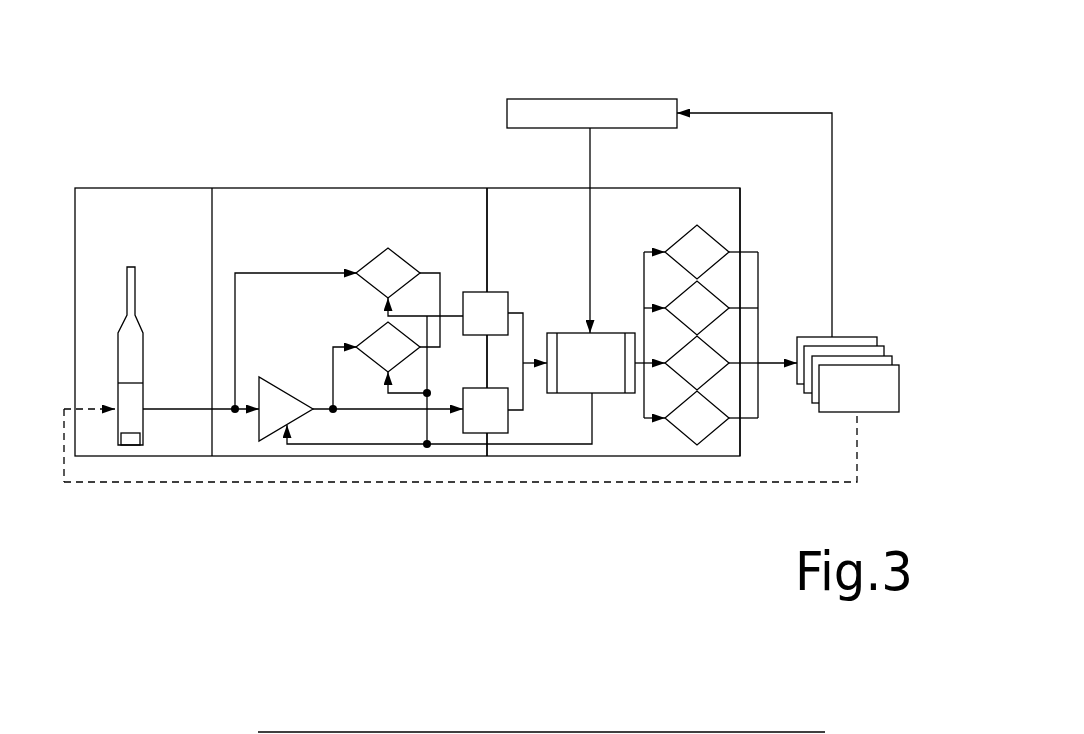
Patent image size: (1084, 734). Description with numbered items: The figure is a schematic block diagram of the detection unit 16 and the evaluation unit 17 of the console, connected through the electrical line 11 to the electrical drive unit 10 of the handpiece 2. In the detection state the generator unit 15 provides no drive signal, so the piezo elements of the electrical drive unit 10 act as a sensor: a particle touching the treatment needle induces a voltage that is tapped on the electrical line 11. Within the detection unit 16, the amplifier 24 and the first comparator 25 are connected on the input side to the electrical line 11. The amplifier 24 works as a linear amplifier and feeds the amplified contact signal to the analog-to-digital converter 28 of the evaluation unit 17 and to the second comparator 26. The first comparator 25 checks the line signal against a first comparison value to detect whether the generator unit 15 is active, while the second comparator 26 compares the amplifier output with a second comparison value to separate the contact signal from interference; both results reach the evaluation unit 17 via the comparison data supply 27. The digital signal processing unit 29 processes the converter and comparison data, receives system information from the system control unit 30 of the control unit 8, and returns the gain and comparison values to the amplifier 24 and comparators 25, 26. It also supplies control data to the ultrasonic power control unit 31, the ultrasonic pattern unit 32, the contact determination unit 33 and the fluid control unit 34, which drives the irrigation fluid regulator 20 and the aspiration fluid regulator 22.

The handpiece 2 is at (106, 398).
The control unit 8 is at (653, 90).
The electrical drive unit 10 is at (130, 425).
The electrical line 11 is at (181, 409).
The generator unit 15 is at (880, 326).
The detection unit 16 is at (390, 205).
The evaluation unit 17 is at (697, 188).
The irrigation fluid regulator 20 is at (880, 326).
The aspiration fluid regulator 22 is at (882, 340).
The amplifier 24 is at (270, 425).
The first comparator 25 is at (398, 265).
The second comparator 26 is at (403, 345).
The comparison data supply 27 is at (497, 298).
The analog-to-digital converter 28 is at (493, 425).
The digital signal processing unit 29 is at (608, 387).
The system control unit 30 is at (597, 108).
The ultrasonic power control unit 31 is at (705, 243).
The ultrasonic pattern unit 32 is at (705, 305).
The contact determination unit 33 is at (708, 370).
The fluid control unit 34 is at (705, 423).